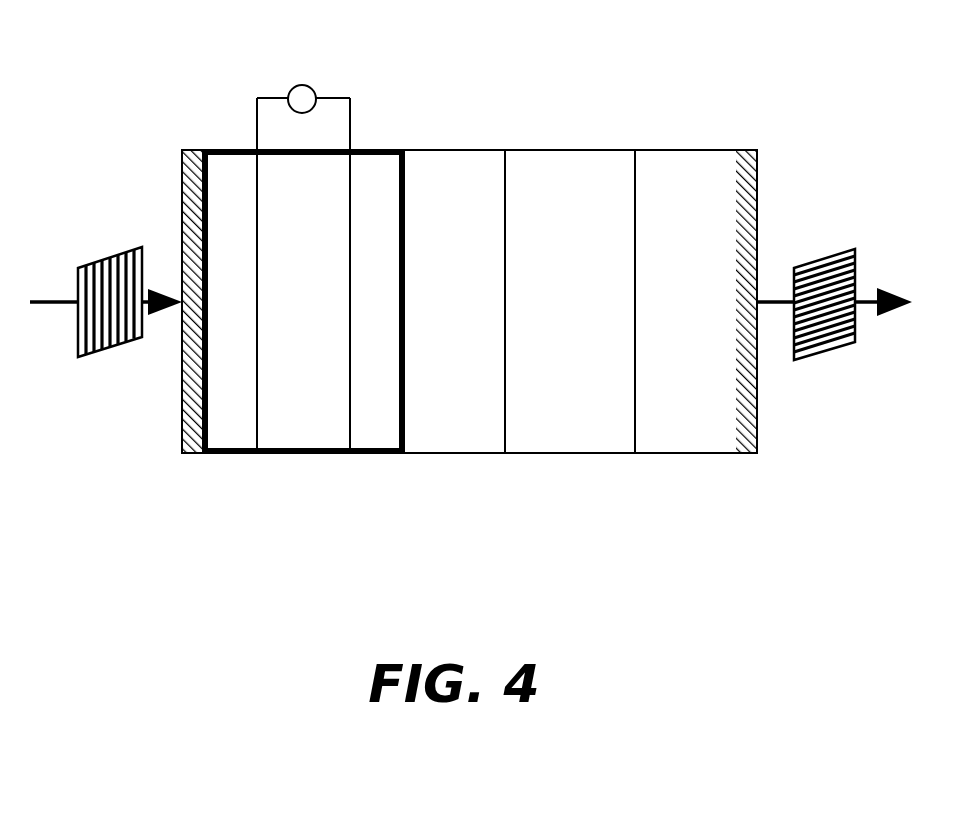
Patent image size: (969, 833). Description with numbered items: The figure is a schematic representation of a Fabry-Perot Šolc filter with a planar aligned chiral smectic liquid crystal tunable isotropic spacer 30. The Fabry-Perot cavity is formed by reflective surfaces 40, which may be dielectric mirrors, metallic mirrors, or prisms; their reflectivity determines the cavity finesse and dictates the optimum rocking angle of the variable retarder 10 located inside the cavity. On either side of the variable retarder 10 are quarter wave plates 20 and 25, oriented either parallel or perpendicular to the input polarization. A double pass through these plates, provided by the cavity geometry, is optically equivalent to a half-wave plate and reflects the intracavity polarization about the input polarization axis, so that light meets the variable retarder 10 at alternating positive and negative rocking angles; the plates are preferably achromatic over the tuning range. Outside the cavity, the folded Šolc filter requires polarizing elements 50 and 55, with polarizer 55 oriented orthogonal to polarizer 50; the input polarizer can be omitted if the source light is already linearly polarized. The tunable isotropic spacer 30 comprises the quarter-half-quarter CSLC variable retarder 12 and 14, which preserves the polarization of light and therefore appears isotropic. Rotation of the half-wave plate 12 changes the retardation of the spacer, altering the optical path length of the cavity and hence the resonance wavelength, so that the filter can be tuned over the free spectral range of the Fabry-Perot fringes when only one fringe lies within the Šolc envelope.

The variable retarder 10 is at (547, 455).
The half-wave plate 12 is at (287, 455).
The quarter-half-quarter CSLC variable retarder 14 is at (230, 455).
The quarter wave plate 20 is at (443, 455).
The quarter wave plate 25 is at (698, 455).
The tunable isotropic spacer 30 is at (378, 130).
The reflective surfaces 40 is at (745, 455).
The polarizer 50 is at (113, 252).
The polarizer 55 is at (815, 258).